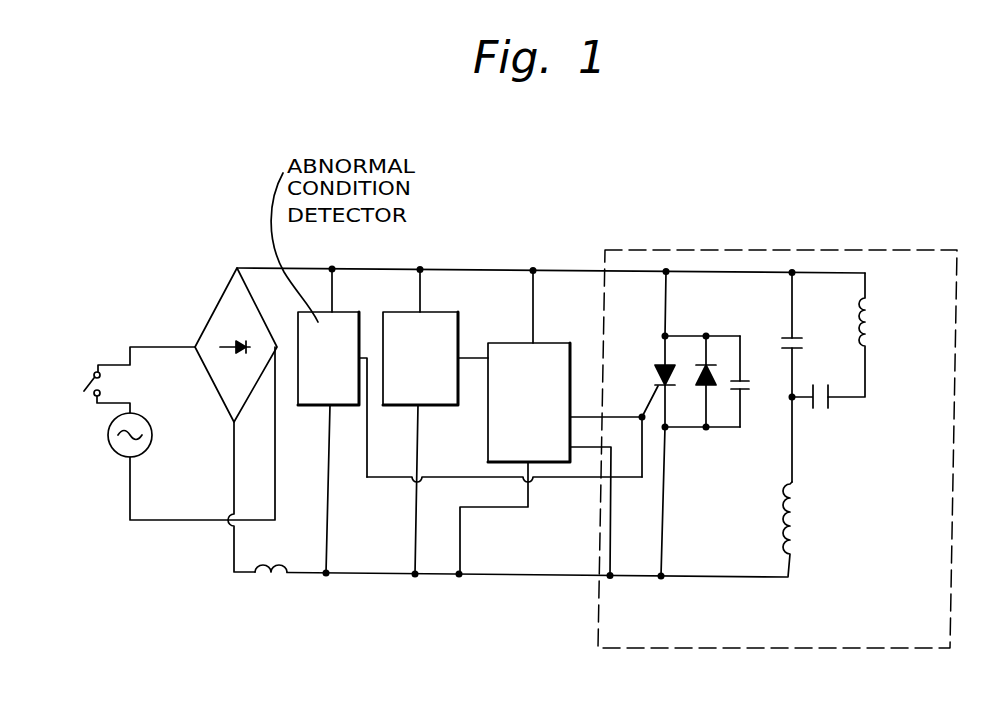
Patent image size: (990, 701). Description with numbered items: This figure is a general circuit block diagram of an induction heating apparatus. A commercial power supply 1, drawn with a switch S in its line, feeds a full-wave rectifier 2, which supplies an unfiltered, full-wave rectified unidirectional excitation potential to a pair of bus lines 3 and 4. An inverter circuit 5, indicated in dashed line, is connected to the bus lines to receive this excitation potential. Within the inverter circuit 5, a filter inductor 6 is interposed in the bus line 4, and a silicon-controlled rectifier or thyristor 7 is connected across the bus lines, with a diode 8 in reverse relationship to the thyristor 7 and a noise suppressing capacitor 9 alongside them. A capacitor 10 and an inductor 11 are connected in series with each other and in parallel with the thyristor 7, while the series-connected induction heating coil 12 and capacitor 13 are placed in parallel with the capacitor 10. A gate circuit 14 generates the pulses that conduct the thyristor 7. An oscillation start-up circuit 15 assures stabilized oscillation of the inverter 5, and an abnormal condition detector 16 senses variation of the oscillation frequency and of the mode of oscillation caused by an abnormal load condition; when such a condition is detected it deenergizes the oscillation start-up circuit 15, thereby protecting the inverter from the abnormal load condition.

The commercial power supply 1 is at (108, 437).
The power switch S is at (82, 382).
The full-wave rectifier 2 is at (205, 316).
The bus line 3 is at (302, 268).
The bus line 4 is at (436, 578).
The inverter circuit 5 is at (750, 250).
The filter inductor 6 is at (280, 565).
The thyristor 7 is at (655, 380).
The diode 8 is at (712, 364).
The noise suppressing capacitor 9 is at (743, 392).
The capacitor 10 is at (800, 347).
The inductor 11 is at (800, 516).
The induction heating coil 12 is at (870, 328).
The capacitor 13 is at (818, 410).
The gate circuit 14 is at (553, 343).
The oscillation start-up circuit 15 is at (447, 312).
The abnormal load condition detecting circuit 16 is at (341, 312).